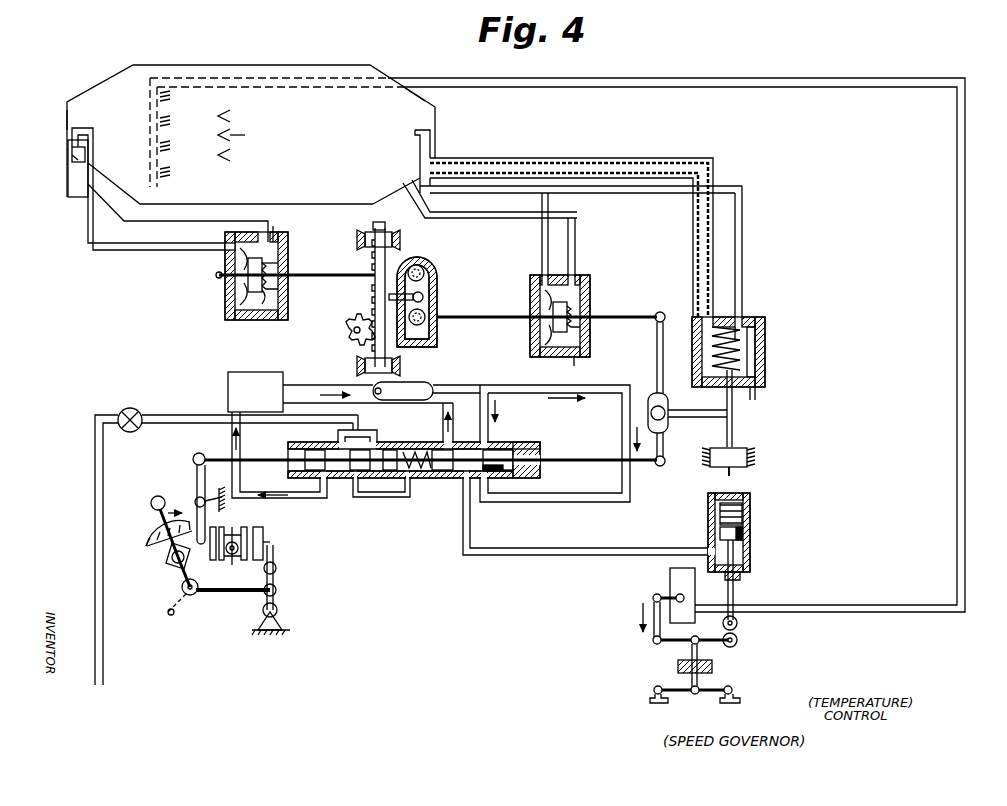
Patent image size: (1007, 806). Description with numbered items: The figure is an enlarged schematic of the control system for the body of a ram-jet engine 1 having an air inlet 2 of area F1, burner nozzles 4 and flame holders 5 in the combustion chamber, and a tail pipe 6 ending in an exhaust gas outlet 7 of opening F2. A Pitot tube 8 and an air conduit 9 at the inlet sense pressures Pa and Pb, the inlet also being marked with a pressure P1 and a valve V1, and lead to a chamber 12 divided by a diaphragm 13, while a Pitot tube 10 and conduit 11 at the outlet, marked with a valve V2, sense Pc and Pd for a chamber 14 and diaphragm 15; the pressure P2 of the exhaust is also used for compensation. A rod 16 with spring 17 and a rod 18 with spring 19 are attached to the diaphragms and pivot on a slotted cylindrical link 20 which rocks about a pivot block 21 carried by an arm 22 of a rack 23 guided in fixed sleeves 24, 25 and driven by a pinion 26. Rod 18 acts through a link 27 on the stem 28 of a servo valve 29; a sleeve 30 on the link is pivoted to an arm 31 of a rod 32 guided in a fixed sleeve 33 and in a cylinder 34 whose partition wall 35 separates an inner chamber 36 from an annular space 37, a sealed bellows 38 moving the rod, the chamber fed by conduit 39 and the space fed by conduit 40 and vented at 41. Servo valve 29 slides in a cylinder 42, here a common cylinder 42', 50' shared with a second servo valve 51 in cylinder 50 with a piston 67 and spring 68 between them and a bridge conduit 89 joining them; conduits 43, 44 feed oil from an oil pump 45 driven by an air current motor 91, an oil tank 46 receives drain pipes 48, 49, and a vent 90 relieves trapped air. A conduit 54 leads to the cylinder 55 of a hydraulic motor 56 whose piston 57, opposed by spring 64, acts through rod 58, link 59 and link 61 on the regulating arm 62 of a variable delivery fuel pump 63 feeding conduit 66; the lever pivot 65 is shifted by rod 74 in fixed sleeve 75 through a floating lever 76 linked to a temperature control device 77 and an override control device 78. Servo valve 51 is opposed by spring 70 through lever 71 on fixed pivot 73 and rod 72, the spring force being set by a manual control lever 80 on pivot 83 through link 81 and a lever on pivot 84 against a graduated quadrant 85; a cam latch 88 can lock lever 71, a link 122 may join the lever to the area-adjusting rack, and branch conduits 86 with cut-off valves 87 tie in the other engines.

The body of ram-jet engine 1 is at (251, 134).
The air inlet 2 is at (66, 115).
The burner nozzles 4 is at (150, 122).
The flame holders 5 is at (238, 135).
The tail pipe 6 is at (426, 97).
The exhaust gas outlet 7 is at (432, 136).
The Pitot tube 8 is at (93, 151).
The air conduit 9 is at (73, 193).
The Pitot tube 10 is at (416, 156).
The air conduit 11 is at (417, 197).
The chamber 12 is at (240, 296).
The diaphragm 13 is at (272, 252).
The chamber 14 is at (586, 306).
The diaphragm 15 is at (576, 304).
The rod 16 is at (218, 274).
The spring 17 is at (261, 320).
The rod 18 is at (628, 319).
The spring 19 is at (580, 369).
The slotted cylindrical link 20 is at (432, 270).
The pivot block 21 is at (432, 306).
The arm 22 is at (385, 293).
The rack 23 is at (389, 256).
The fixed sleeve 24 is at (397, 240).
The fixed sleeve 25 is at (401, 366).
The pinion 26 is at (342, 336).
The link 27 is at (656, 352).
The stem 28 is at (602, 473).
The servo valve 29 is at (512, 452).
The sleeve 30 is at (668, 395).
The arm 31 is at (700, 418).
The rod 32 is at (722, 469).
The fixed sleeve 33 is at (740, 461).
The cylinder 34 is at (767, 346).
The partition wall 35 is at (767, 326).
The inner cylindrical chamber 36 is at (720, 379).
The outer annular space 37 is at (767, 367).
The sealed bellows 38 is at (738, 328).
The conduit 39 is at (742, 228).
The conduit 40 is at (706, 272).
The vent 41 is at (757, 395).
The cylinder 42 is at (368, 380).
The common cylinder 42' is at (517, 505).
The conduit 43 is at (497, 425).
The conduit 44 is at (468, 390).
The oil pump 45 is at (432, 383).
The oil tank 46 is at (228, 395).
The drain pipe 48 is at (456, 428).
The drain pipe 49 is at (230, 440).
The cylinder 50 is at (410, 487).
The common cylinder 50' is at (311, 507).
The second servo valve 51 is at (355, 485).
The conduit 54 is at (465, 513).
The cylinder 55 is at (708, 530).
The hydraulic motor 56 is at (754, 557).
The piston 57 is at (752, 531).
The rod 58 is at (735, 596).
The link 59 is at (738, 623).
The link 61 is at (652, 610).
The regulating arm 62 is at (652, 596).
The variable delivery fuel pump 63 is at (668, 575).
The spring 64 is at (752, 508).
The pivot 65 is at (739, 645).
The conduit 66 is at (345, 80).
The piston 67 is at (410, 451).
The spring 68 is at (400, 486).
The spring 70 is at (250, 536).
The lever 71 is at (196, 488).
The rod 72 is at (192, 460).
The fixed pivot 73 is at (226, 510).
The rod 74 is at (700, 684).
The fixed sleeve 75 is at (676, 666).
The floating lever 76 is at (697, 697).
The temperature control device 77 is at (805, 702).
The maximum temperature override control device 78 is at (662, 735).
The manual control lever 80 is at (166, 551).
The link 81 is at (230, 594).
The fixed pivot 83 is at (175, 566).
The fixed pivot 84 is at (280, 613).
The quadrant 85 is at (148, 541).
The branch conduit 86 is at (206, 421).
The cut-off valve 87 is at (139, 413).
The cam latch 88 is at (229, 556).
The bridge conduit 89 is at (371, 433).
The vent 90 is at (443, 509).
The air current motor 91 is at (71, 156).
The link 122 is at (166, 613).
The full open area of exhaust gas outlet F1 is at (66, 102).
The opening area of exhaust gas outlet F2 is at (446, 109).
The pressure P1 is at (85, 128).
The exhaust gas pressure P2 is at (394, 160).
The Pitot pressure at air inlet Pa is at (100, 173).
The static pressure at air inlet Pb is at (77, 208).
The Pitot pressure at exhaust outlet Pc is at (542, 246).
The static pressure at exhaust outlet Pd is at (575, 218).
The valve V1 is at (74, 148).
The valve V2 is at (432, 118).